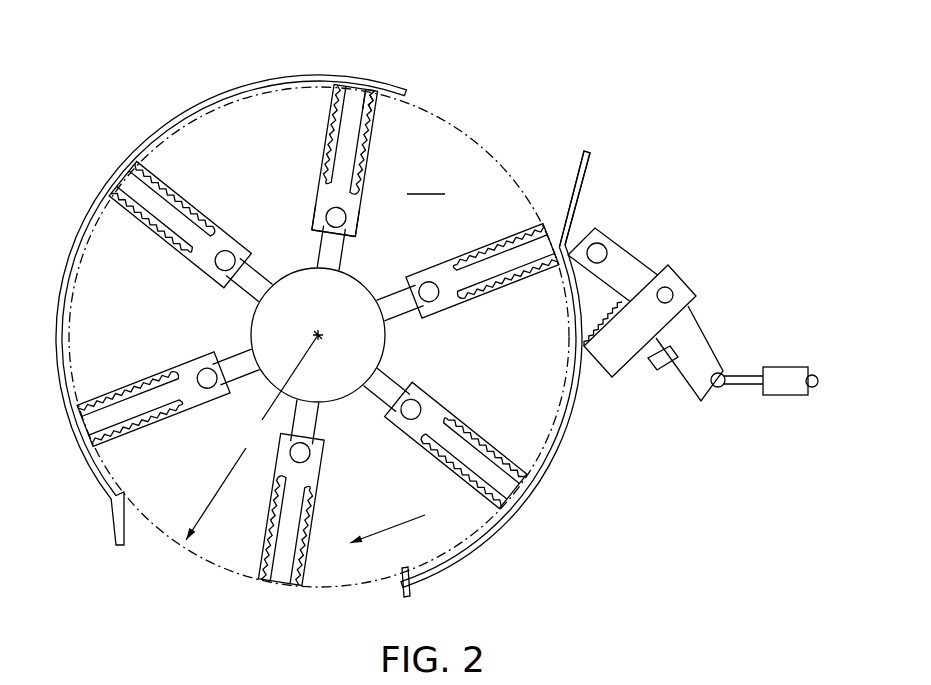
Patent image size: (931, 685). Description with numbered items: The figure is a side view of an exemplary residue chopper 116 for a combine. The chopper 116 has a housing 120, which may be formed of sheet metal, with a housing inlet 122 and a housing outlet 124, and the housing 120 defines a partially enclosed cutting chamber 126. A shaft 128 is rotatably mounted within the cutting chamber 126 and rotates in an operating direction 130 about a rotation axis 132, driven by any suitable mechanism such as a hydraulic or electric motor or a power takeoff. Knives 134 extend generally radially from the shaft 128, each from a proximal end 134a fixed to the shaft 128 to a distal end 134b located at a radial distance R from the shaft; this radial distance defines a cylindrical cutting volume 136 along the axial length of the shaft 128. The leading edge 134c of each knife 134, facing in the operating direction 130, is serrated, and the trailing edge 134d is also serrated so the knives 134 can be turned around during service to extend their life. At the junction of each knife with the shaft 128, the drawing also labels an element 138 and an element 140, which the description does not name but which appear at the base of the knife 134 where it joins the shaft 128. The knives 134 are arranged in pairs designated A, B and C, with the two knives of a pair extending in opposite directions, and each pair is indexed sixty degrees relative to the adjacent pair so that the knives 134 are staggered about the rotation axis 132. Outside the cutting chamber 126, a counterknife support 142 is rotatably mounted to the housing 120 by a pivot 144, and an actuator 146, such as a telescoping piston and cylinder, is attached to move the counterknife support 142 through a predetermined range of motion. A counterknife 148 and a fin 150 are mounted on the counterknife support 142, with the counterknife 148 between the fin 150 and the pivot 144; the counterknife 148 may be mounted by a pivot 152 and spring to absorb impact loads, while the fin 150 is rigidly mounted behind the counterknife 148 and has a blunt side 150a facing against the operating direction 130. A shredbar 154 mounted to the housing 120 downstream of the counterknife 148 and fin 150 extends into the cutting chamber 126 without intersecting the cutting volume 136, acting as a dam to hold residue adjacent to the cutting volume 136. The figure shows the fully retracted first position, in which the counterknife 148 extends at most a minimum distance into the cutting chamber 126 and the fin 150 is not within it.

The chopper 116 is at (597, 90).
The housing 120 is at (60, 255).
The housing inlet 122 is at (528, 158).
The housing outlet 124 is at (247, 582).
The cutting chamber 126 is at (318, 374).
The shaft 128 is at (265, 333).
The operating direction 130 is at (400, 524).
The rotation axis 132 is at (317, 333).
The knife 134 is at (347, 118).
The proximal end 134a is at (328, 247).
The distal end 134b is at (353, 88).
The leading edge 134c is at (372, 122).
The trailing edge 134d is at (325, 128).
The cutting volume 136 is at (561, 178).
The pivot pin 138 is at (335, 217).
The pivot housing 140 is at (323, 238).
The counterknife support 142 is at (632, 268).
The pivot 144 is at (599, 250).
The actuator 146 is at (784, 388).
The counterknife 148 is at (627, 335).
The fin 150 is at (675, 372).
The blunt side 150a is at (654, 354).
The pivot 152 is at (667, 294).
The shredbar 154 is at (403, 582).